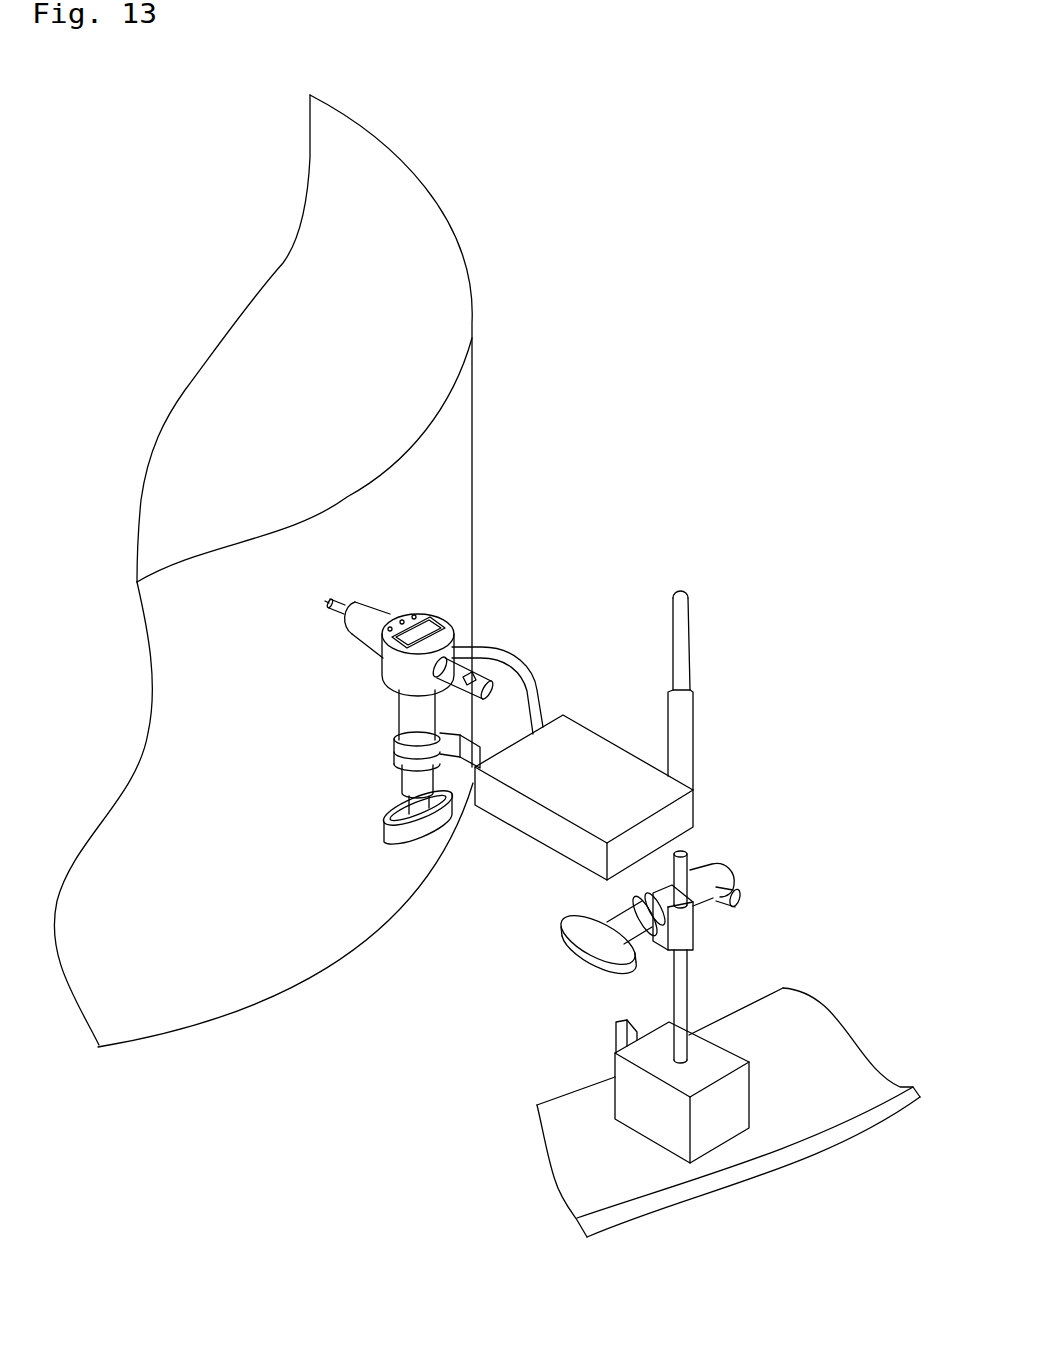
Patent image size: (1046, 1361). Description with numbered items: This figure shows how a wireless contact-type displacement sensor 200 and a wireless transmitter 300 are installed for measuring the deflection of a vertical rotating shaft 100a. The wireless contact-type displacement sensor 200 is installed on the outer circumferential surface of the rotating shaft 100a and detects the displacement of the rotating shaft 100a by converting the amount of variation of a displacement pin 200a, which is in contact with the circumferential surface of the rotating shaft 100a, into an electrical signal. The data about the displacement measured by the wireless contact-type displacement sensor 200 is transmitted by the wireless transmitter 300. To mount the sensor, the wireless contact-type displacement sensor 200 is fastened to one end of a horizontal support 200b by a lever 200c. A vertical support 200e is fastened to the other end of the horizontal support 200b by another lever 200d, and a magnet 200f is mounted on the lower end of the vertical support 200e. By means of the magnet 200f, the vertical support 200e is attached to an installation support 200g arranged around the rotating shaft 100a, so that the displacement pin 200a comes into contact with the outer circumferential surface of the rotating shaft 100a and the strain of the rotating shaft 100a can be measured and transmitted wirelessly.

The rotating shaft 100a is at (452, 483).
The wireless contact-type displacement sensor 200 is at (398, 649).
The displacement pin 200a is at (330, 600).
The horizontal support 200b is at (533, 706).
The lever 200c is at (384, 824).
The lever 200d is at (593, 962).
The vertical support 200e is at (682, 965).
The magnet 200f is at (713, 1135).
The installation support 200g is at (612, 1187).
The wireless transmitter 300 is at (548, 823).